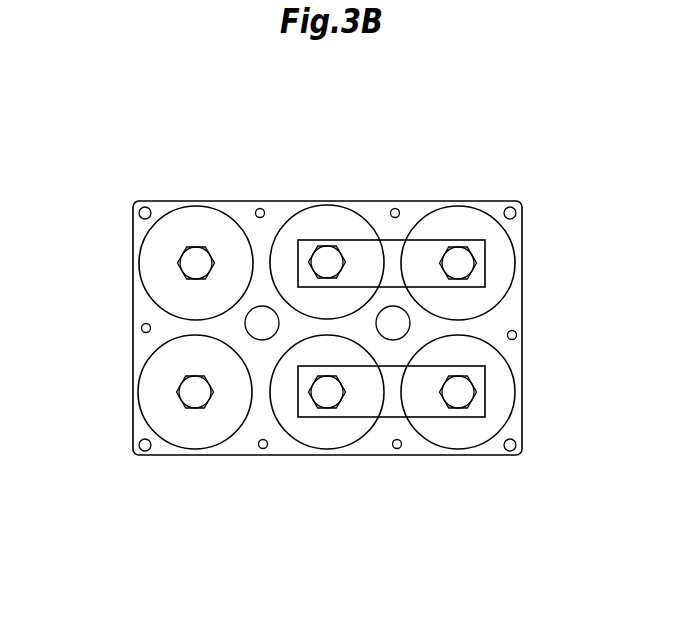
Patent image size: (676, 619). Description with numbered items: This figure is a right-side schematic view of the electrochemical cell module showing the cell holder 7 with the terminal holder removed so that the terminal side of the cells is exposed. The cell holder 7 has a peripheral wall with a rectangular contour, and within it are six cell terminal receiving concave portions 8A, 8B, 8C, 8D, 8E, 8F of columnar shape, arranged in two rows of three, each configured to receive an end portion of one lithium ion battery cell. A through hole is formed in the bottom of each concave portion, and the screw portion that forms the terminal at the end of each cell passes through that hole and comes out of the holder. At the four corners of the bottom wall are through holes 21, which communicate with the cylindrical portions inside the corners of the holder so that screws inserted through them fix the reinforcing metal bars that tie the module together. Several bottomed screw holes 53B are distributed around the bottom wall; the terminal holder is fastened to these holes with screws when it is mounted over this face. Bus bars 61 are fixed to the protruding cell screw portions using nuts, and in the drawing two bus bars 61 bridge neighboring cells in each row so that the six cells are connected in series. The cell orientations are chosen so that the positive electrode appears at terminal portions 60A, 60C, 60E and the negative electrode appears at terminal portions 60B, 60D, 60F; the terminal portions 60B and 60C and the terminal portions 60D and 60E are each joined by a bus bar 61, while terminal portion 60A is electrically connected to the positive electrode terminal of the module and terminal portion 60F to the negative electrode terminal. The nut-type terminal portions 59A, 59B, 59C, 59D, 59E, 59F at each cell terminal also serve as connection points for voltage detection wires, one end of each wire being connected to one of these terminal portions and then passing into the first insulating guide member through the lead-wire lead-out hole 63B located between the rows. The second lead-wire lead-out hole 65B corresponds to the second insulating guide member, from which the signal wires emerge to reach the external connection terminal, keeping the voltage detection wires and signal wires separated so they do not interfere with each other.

The cell holder 7 is at (523, 215).
The through holes 21 is at (139, 213).
The bottomed screw holes 53B is at (260, 208).
The cell terminal receiving concave portion 8A is at (139, 262).
The cell terminal receiving concave portion 8B is at (298, 213).
The cell terminal receiving concave portion 8C is at (515, 252).
The cell terminal receiving concave portion 8D is at (515, 390).
The cell terminal receiving concave portion 8E is at (358, 441).
The cell terminal receiving concave portion 8F is at (138, 400).
The terminal portion 59A is at (191, 262).
The terminal portion 59B is at (325, 262).
The terminal portion 59C is at (458, 262).
The terminal portion 59D is at (455, 403).
The terminal portion 59E is at (325, 400).
The terminal portion 59F is at (191, 400).
The terminal portion 60A is at (202, 262).
The terminal portion 60B is at (330, 262).
The terminal portion 60C is at (464, 262).
The terminal portion 60D is at (462, 400).
The terminal portion 60E is at (332, 402).
The terminal portion 60F is at (200, 395).
The bus bar 61 is at (475, 275).
The lead-wire lead-out hole 63B is at (263, 340).
The lead-wire lead-out hole 65B is at (392, 318).